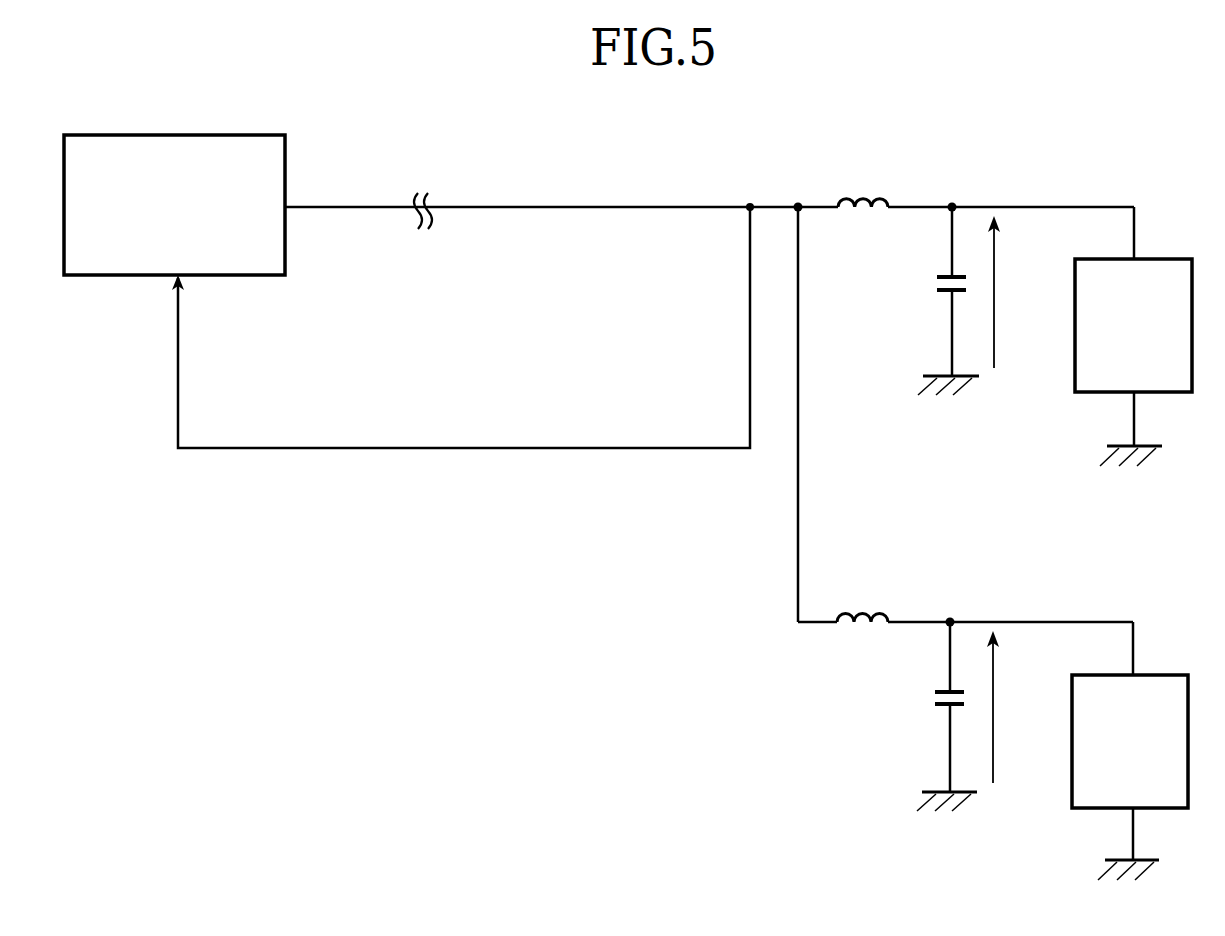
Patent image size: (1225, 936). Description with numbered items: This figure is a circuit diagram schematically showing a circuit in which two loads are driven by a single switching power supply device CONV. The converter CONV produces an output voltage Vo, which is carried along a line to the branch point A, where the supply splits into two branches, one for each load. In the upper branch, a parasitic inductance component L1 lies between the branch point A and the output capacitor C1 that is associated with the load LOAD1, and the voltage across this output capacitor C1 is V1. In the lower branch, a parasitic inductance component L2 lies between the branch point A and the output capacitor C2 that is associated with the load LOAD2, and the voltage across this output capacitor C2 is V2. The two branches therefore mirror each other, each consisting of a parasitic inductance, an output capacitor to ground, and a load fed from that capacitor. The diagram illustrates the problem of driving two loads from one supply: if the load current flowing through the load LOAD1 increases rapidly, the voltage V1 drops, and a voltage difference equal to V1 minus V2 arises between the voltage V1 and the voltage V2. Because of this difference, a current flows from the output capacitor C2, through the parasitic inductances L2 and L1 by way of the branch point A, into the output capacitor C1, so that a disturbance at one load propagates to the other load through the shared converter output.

The switching power supply device CONV is at (174, 205).
The output voltage Vo is at (541, 200).
The branch point A is at (797, 204).
The parasitic inductance component L1 is at (868, 196).
The output capacitor C1 is at (937, 287).
The voltage of output capacitor C1 V1 is at (1014, 292).
The load LOAD1 is at (1133, 336).
The parasitic inductance component L2 is at (868, 612).
The output capacitor C2 is at (935, 702).
The voltage of output capacitor C2 V2 is at (1013, 707).
The load LOAD2 is at (1130, 751).